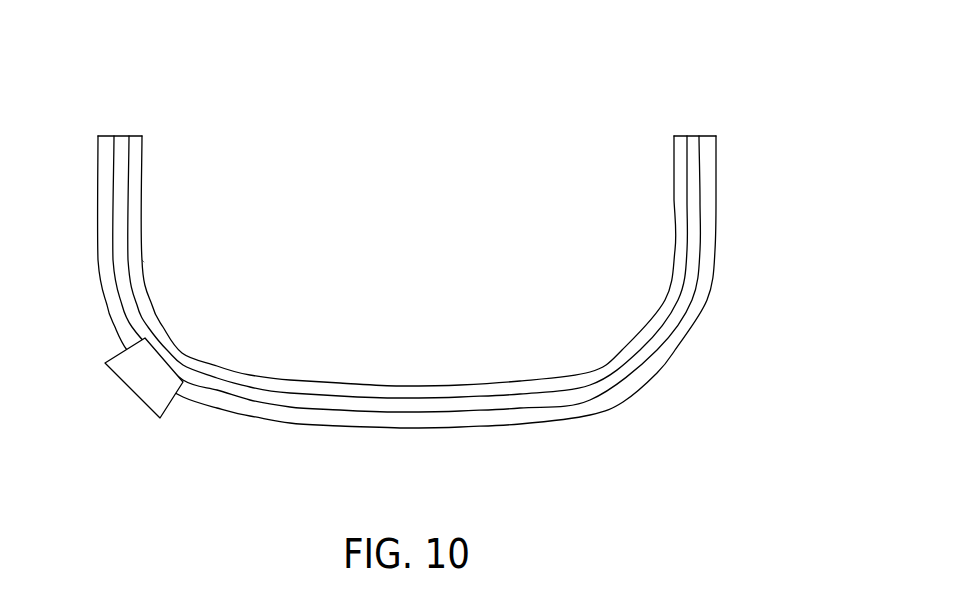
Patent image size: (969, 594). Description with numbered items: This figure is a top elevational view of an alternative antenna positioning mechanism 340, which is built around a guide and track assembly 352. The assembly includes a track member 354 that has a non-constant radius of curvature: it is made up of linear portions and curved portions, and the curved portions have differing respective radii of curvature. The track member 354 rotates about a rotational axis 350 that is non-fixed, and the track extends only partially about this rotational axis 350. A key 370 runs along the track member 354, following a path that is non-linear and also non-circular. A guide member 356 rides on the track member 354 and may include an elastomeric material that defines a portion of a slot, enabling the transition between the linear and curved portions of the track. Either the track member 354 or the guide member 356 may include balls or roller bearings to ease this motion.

The antenna positioning mechanism 340 is at (435, 269).
The rotational axis 350 is at (268, 258).
The guide and track assembly 352 is at (407, 329).
The track member 354 is at (717, 197).
The guide member 356 is at (130, 393).
The key 370 is at (285, 413).